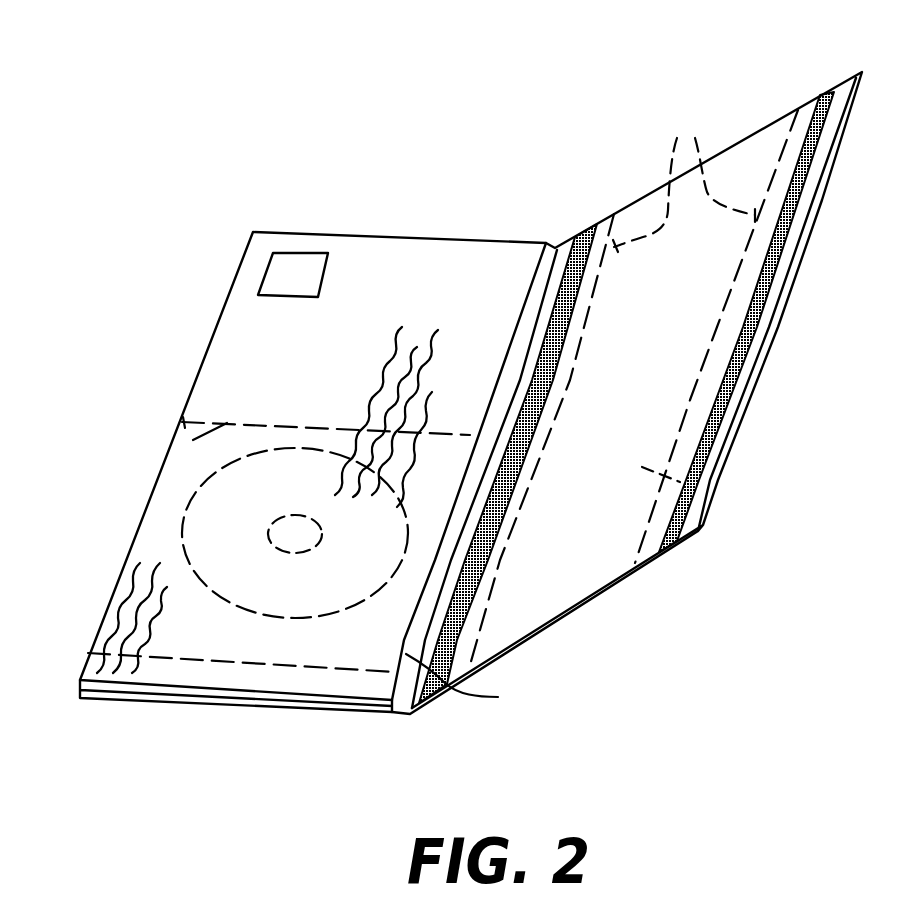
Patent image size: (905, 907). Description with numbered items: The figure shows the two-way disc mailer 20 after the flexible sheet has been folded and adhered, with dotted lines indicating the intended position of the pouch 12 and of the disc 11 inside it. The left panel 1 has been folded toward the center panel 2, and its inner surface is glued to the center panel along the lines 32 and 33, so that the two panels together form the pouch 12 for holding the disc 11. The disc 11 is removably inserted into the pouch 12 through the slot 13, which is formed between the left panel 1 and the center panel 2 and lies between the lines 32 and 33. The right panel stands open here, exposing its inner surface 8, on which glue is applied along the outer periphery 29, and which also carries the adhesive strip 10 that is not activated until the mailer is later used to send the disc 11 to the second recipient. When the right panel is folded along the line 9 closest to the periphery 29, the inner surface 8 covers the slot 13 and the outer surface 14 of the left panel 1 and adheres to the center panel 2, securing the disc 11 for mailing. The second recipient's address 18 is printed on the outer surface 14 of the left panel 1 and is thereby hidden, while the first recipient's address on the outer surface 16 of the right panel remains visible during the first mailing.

The left panel 1 is at (152, 536).
The center panel 2 is at (113, 697).
The inner surface of the right panel 8 is at (634, 387).
The line 9 is at (684, 178).
The adhesive strip 10 is at (586, 240).
The disc 11 is at (336, 619).
The pouch 12 is at (215, 658).
The slot 13 is at (469, 684).
The outer surface of the left panel 14 is at (293, 319).
The outer surface of the right panel 16 is at (680, 478).
The second recipient's address 18 is at (425, 321).
The two-way disc mailer 20 is at (327, 131).
The outer periphery 29 is at (836, 90).
The line 32 is at (247, 667).
The line 33 is at (175, 445).